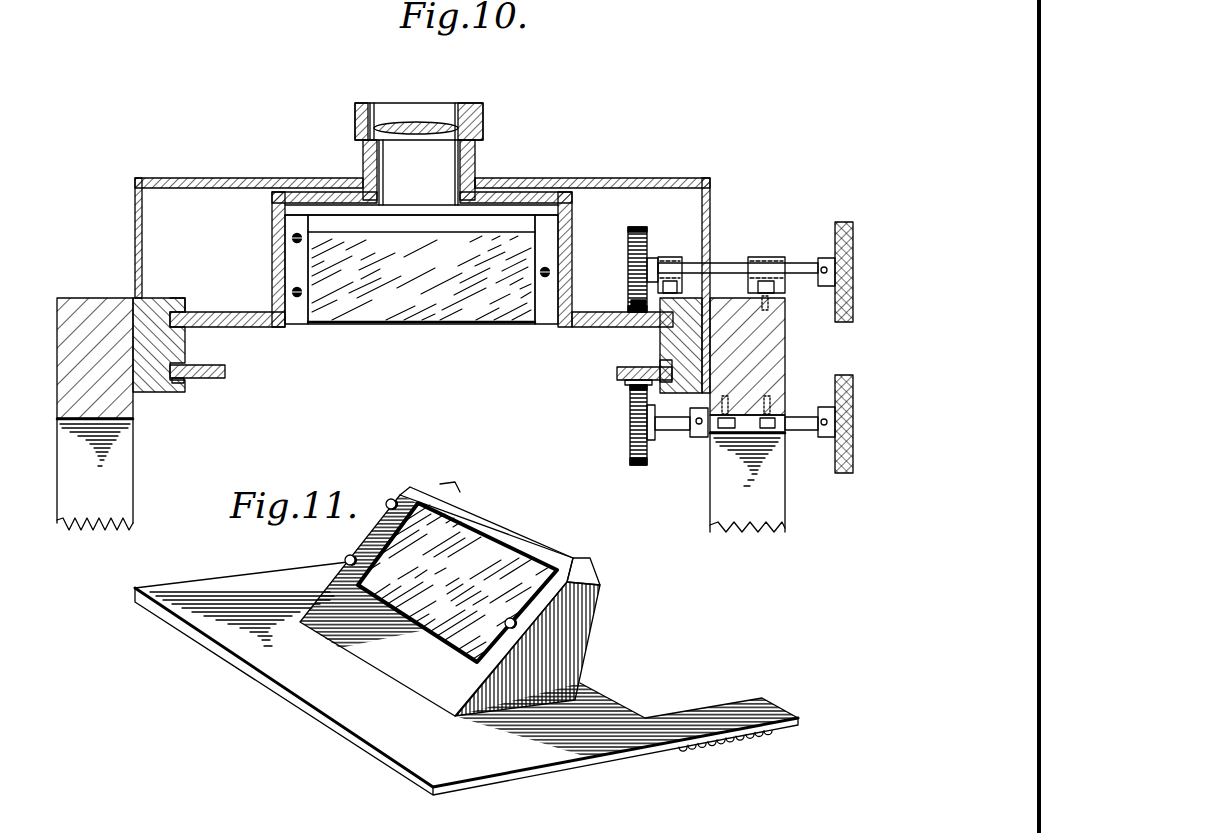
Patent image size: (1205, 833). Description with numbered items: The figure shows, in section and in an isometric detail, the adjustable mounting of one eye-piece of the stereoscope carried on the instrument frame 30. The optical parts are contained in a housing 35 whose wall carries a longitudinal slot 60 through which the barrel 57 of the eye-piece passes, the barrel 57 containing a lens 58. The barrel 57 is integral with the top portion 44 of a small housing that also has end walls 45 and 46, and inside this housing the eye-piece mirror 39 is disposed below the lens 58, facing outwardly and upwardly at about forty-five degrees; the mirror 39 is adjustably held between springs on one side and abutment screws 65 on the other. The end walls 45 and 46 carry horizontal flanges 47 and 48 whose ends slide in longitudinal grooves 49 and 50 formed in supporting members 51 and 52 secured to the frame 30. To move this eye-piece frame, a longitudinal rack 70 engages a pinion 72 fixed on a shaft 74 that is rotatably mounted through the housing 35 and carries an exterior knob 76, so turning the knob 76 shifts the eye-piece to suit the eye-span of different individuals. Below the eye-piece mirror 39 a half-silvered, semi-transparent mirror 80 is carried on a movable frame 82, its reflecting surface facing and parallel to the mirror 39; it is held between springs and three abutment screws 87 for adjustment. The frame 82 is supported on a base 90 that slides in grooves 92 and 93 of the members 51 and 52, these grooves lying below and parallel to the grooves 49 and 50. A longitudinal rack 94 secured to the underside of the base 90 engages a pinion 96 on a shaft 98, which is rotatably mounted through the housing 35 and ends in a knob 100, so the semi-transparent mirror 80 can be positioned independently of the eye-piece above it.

In FIG. 10, the frame 30 is at (130, 486).
In FIG. 10, the housing 35 is at (685, 178).
In FIG. 10, the eye-piece mirror 39 is at (434, 312).
In FIG. 10, the top portion 44 is at (545, 194).
In FIG. 10, the end wall 45 is at (272, 255).
In FIG. 10, the end wall 46 is at (572, 226).
In FIG. 10, the horizontal flange 47 is at (247, 312).
In FIG. 10, the horizontal flange 48 is at (584, 303).
In FIG. 10, the longitudinal groove 49 is at (180, 298).
In FIG. 10, the longitudinal groove 50 is at (660, 330).
In FIG. 10, the supporting member 51 is at (162, 392).
In FIG. 10, the supporting member 52 is at (689, 386).
In FIG. 10, the barrel 57 is at (363, 157).
In FIG. 10, the lens 58 is at (428, 135).
In FIG. 10, the longitudinal slot 60 is at (478, 184).
In FIG. 10, the abutment screw 65 is at (302, 290).
In FIG. 10, the longitudinal rack 70 is at (625, 312).
In FIG. 10, the pinion 72 is at (641, 230).
In FIG. 10, the shaft 74 is at (730, 262).
In FIG. 10, the knob 76 is at (842, 222).
In FIG. 11, the semi-transparent mirror 80 is at (513, 535).
In FIG. 11, the movable frame 82 is at (584, 664).
In FIG. 11, the abutment screw 87 is at (391, 498).
In FIG. 10, the base 90 is at (225, 372).
In FIG. 11, the base 90 is at (214, 576).
In FIG. 10, the groove 92 is at (188, 383).
In FIG. 10, the groove 93 is at (662, 364).
In FIG. 10, the longitudinal rack 94 is at (628, 386).
In FIG. 11, the longitudinal rack 94 is at (742, 740).
In FIG. 10, the pinion 96 is at (641, 466).
In FIG. 10, the shaft 98 is at (804, 417).
In FIG. 10, the knob 100 is at (843, 473).